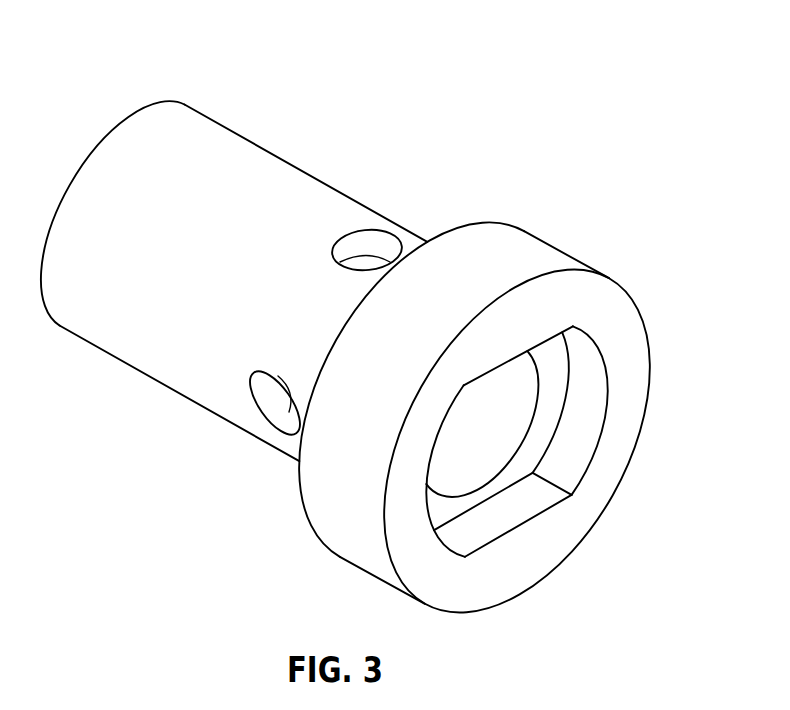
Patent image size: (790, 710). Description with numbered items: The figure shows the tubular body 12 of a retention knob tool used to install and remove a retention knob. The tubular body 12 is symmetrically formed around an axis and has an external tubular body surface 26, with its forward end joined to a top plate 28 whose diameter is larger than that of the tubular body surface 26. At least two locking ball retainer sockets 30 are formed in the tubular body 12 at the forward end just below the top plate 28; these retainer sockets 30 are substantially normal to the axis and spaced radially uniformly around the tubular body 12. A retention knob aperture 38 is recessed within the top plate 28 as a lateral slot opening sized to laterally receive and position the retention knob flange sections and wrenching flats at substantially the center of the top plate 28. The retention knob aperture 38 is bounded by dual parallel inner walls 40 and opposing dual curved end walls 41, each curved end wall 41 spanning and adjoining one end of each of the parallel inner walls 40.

The tubular body 12 is at (156, 57).
The external tubular body surface 26 is at (162, 221).
The top plate 28 is at (596, 319).
The locking ball retainer sockets 30 is at (370, 258).
The retention knob aperture 38 is at (543, 455).
The dual parallel inner walls 40 is at (525, 502).
The opposing dual curved end walls 41 is at (587, 393).